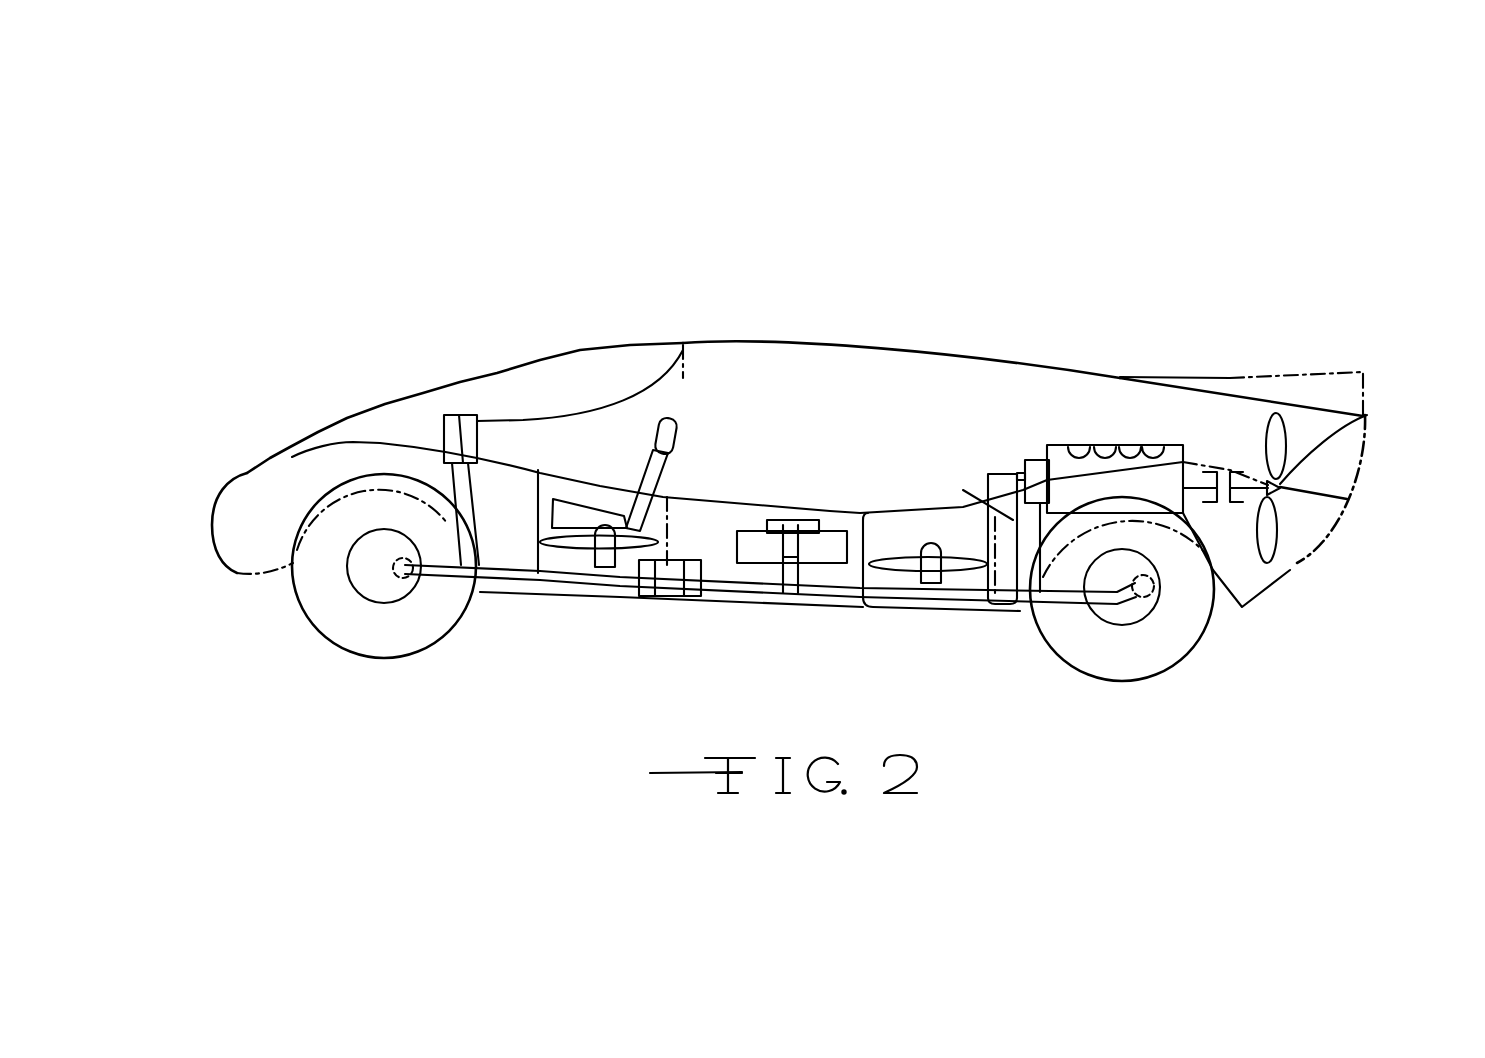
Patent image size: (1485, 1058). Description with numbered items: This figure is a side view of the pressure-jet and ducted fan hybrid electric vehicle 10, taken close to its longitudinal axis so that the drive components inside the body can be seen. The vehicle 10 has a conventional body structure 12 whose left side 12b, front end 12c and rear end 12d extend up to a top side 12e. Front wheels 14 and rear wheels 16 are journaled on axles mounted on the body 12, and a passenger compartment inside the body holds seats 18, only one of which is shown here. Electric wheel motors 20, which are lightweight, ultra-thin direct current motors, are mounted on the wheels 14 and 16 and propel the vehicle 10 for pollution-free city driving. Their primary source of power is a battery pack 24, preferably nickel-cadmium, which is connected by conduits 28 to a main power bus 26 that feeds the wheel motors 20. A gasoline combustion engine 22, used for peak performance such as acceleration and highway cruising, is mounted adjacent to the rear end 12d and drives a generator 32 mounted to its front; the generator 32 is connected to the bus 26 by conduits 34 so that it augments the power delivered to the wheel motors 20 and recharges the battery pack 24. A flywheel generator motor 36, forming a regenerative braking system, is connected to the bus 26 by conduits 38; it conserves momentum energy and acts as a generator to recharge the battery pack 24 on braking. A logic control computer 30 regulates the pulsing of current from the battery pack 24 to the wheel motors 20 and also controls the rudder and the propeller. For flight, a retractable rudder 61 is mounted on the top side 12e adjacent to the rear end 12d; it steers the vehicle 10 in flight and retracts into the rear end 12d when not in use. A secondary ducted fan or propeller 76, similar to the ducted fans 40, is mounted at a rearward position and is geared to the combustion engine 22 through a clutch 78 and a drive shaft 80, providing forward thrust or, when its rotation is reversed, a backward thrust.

The vehicle 10 is at (1255, 241).
The body structure 12 is at (1087, 397).
The left side 12b is at (846, 488).
The front end 12c is at (210, 533).
The rear end 12d is at (1365, 447).
The top side 12e is at (773, 341).
The front wheels 14 is at (327, 613).
The rear wheels 16 is at (1093, 652).
The seats 18 is at (674, 462).
The wheel motors 20 is at (405, 578).
The combustion engine 22 is at (1103, 487).
The battery pack 24 is at (680, 560).
The main power bus 26 is at (745, 585).
The conduits 28 is at (640, 582).
The logic control computer 30 is at (443, 433).
The generator 32 is at (1034, 458).
The conduits 34 is at (988, 520).
The flywheel generator motor 36 is at (753, 540).
The conduits 38 is at (778, 545).
The ducted fans 40 is at (591, 567).
The retractable rudder 61 is at (1323, 383).
The secondary ducted fan 76 is at (1367, 417).
The clutch 78 is at (1223, 455).
The drive shaft 80 is at (1250, 490).